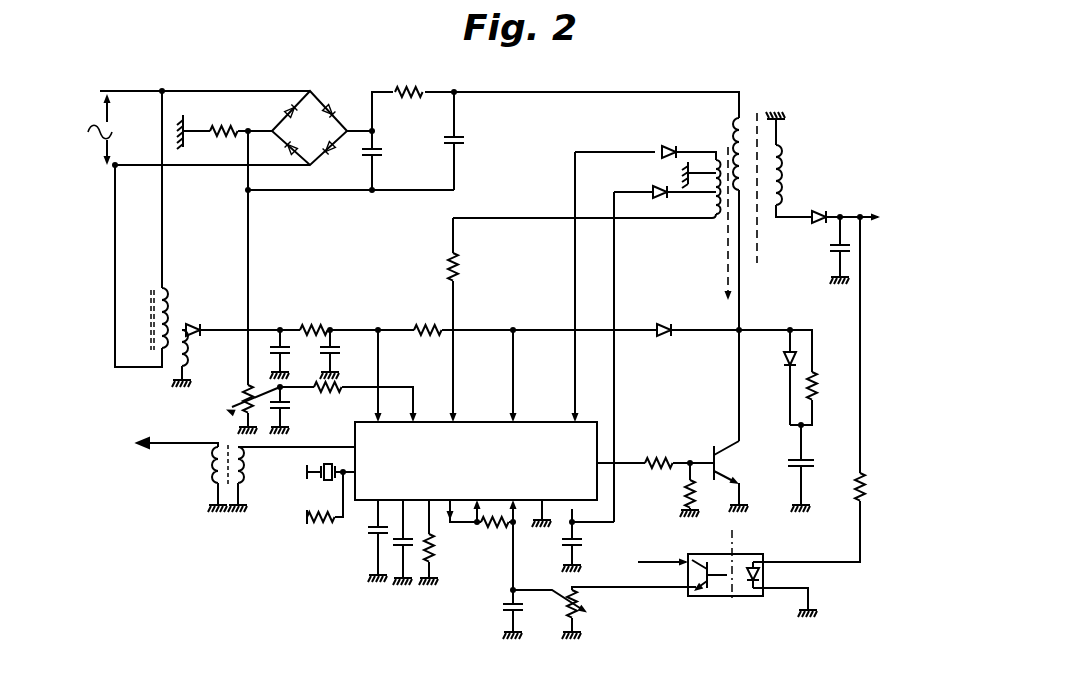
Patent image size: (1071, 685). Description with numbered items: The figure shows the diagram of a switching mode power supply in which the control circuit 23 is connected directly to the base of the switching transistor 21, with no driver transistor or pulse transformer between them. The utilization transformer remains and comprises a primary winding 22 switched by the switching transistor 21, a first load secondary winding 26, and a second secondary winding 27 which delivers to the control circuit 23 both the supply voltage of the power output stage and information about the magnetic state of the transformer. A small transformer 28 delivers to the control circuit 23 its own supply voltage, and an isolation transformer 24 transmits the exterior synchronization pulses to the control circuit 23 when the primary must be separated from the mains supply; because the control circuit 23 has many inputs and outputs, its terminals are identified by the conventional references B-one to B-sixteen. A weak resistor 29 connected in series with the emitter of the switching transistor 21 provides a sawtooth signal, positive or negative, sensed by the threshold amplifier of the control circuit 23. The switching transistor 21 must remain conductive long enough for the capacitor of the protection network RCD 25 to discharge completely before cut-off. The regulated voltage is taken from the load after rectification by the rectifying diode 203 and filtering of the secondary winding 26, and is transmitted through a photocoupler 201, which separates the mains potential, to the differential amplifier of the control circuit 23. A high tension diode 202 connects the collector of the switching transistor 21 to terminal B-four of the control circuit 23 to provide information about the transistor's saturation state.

The switching transistor 21 is at (731, 460).
The primary winding 22 is at (733, 138).
The control circuit 23 is at (476, 433).
The isolation transformer 24 is at (209, 459).
The protection network RCD 25 is at (817, 318).
The first load secondary winding 26 is at (798, 168).
The second secondary winding 27 is at (712, 208).
The small transformer 28 is at (214, 310).
The weak resistor 29 is at (240, 132).
The photocoupler 201 is at (745, 584).
The high tension diode 202 is at (656, 339).
The rectifying diode 203 is at (824, 232).